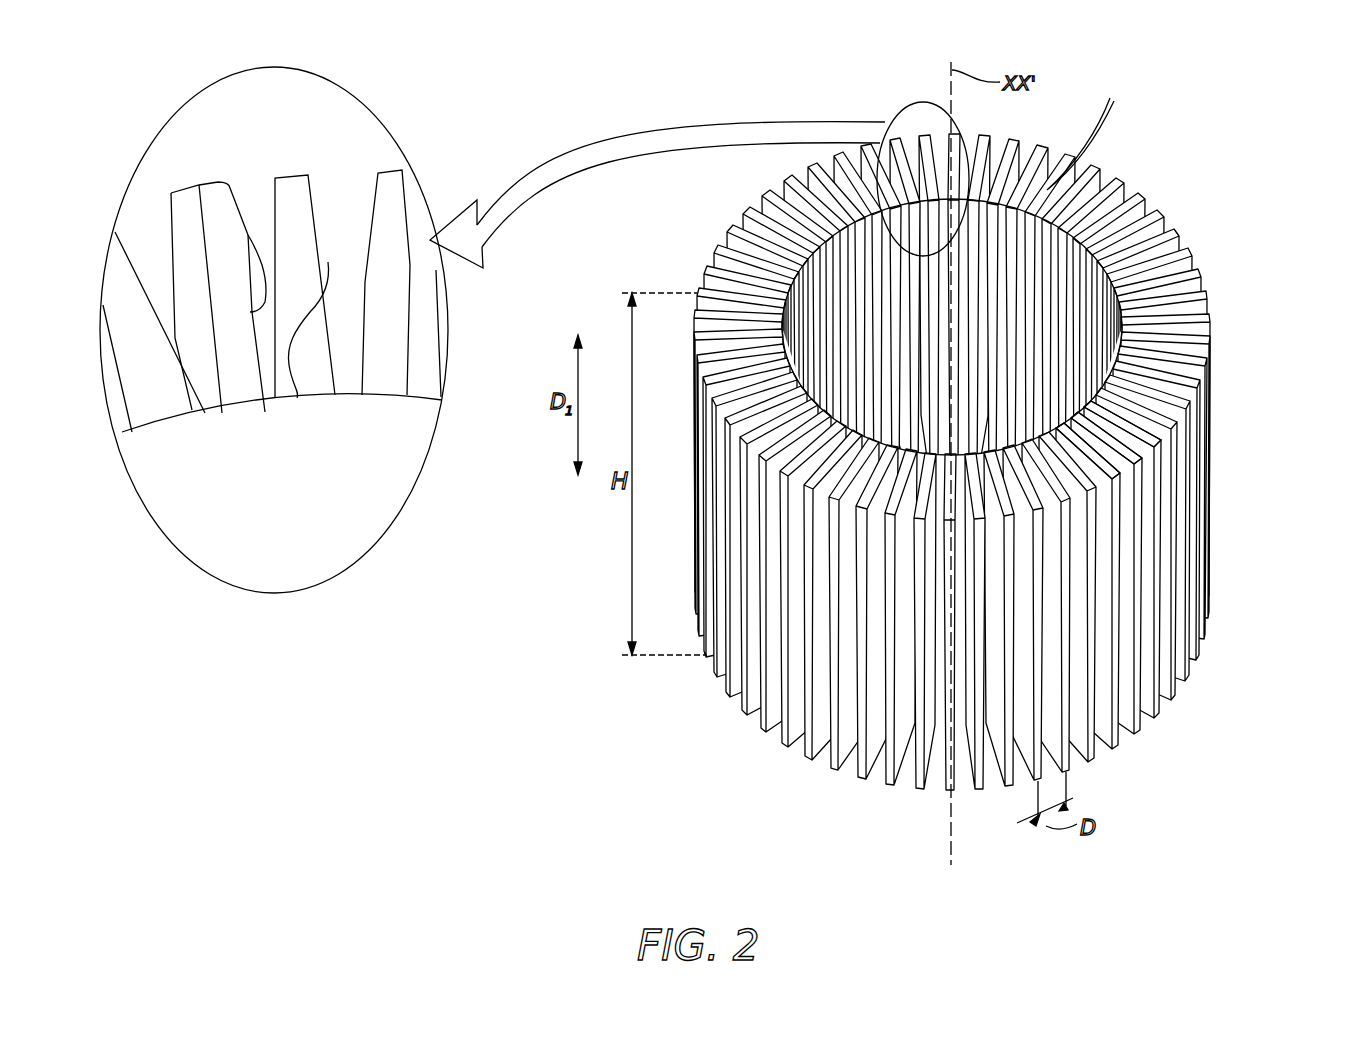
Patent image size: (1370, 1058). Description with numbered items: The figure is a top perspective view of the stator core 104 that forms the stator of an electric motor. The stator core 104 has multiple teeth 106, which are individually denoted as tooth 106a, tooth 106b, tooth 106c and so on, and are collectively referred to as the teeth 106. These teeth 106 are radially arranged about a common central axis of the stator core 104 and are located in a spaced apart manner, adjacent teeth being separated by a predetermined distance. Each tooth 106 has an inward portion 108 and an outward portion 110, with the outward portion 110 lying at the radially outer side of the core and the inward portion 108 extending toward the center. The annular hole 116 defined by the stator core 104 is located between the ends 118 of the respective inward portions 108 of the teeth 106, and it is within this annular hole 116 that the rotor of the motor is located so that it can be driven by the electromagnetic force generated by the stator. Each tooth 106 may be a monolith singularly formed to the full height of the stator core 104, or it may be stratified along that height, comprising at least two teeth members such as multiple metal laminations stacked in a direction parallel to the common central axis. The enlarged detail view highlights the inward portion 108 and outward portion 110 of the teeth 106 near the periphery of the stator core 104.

The stator core 104 is at (1021, 415).
The teeth 106 is at (1157, 260).
The tooth 106a is at (1100, 475).
The tooth 106b is at (1115, 460).
The tooth 106c is at (1115, 425).
The inward portion 108 is at (317, 230).
The outward portion 110 is at (250, 236).
The annular hole 116 is at (994, 271).
The end 118 is at (1094, 132).